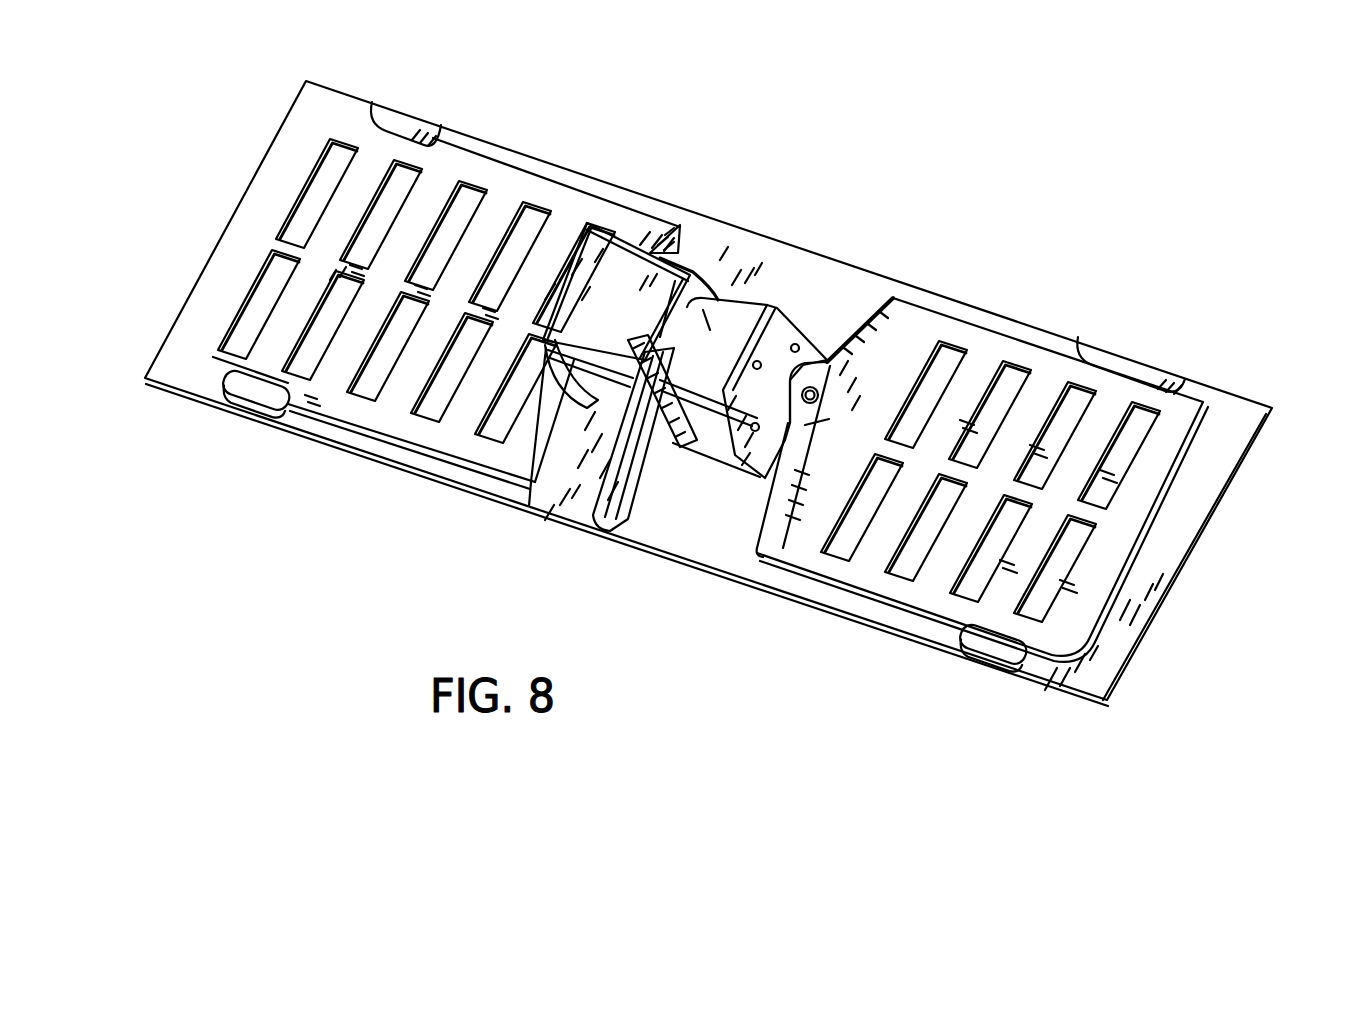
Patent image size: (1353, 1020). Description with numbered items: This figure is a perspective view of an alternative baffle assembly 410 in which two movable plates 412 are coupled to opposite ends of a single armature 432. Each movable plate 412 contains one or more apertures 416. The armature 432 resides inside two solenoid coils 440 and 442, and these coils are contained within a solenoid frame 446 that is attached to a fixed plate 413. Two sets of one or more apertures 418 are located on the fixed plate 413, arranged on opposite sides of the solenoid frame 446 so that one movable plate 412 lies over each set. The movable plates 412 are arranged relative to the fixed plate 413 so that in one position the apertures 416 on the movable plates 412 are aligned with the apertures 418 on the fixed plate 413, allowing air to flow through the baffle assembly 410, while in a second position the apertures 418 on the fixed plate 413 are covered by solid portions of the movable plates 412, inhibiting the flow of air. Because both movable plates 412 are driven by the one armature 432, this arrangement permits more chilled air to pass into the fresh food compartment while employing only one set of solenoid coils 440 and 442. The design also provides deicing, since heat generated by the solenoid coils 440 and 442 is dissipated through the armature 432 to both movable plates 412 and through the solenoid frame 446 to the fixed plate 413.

The baffle assembly 410 is at (775, 159).
The movable plate 412 is at (444, 178).
The fixed plate 413 is at (720, 505).
The apertures 416 is at (477, 185).
The apertures 418 is at (266, 278).
The armature 432 is at (793, 345).
The solenoid coil 440 is at (630, 410).
The solenoid coil 442 is at (718, 300).
The solenoid frame 446 is at (626, 282).